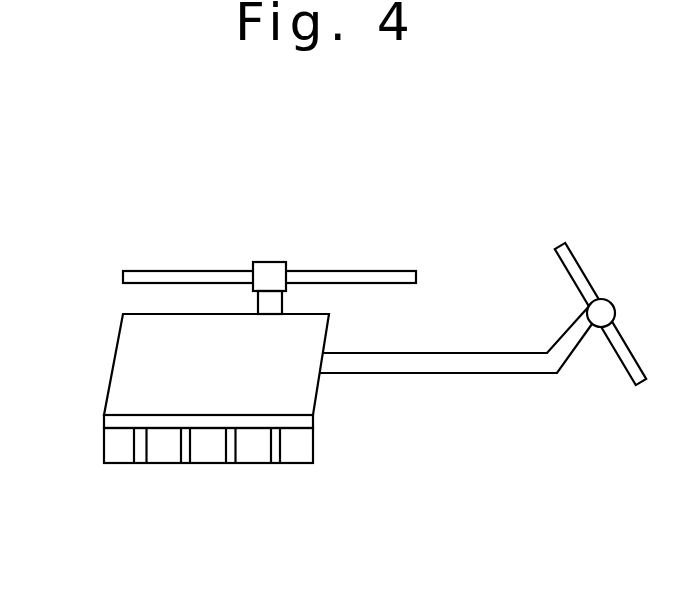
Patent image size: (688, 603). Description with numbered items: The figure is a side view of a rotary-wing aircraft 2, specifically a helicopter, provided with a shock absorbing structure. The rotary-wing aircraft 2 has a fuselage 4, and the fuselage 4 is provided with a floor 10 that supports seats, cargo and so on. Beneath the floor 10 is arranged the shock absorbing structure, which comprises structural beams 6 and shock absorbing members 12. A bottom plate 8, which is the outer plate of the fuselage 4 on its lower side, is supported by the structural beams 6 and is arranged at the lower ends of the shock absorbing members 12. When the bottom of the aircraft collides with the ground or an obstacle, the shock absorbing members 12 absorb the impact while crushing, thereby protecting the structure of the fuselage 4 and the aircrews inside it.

The rotary-wing aircraft 2 is at (92, 207).
The fuselage 4 is at (121, 338).
The structural beams 6 is at (112, 421).
The bottom plate 8 is at (165, 462).
The floor 10 is at (270, 413).
The shock absorbing members 12 is at (142, 457).